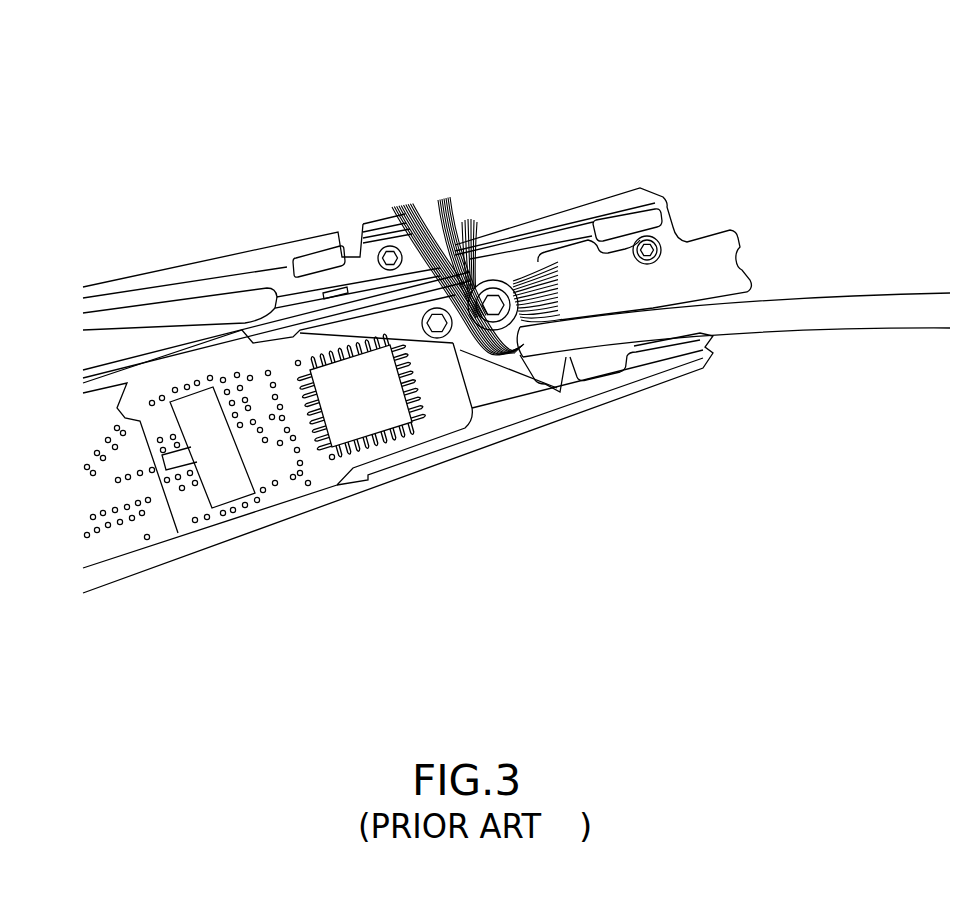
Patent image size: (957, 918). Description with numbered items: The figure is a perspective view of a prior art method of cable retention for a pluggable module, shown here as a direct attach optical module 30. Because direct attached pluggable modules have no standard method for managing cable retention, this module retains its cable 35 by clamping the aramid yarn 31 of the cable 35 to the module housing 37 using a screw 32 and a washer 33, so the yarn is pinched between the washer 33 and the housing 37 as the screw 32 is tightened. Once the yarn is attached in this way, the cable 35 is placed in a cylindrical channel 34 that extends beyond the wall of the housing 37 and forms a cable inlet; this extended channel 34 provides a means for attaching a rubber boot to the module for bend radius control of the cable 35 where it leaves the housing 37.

The direct attach optical module 30 is at (262, 142).
The aramid yarn 31 is at (403, 203).
The screw 32 is at (493, 298).
The washer 33 is at (504, 287).
The cylindrical channel 34 is at (713, 275).
The cable 35 is at (773, 320).
The module housing 37 is at (457, 450).